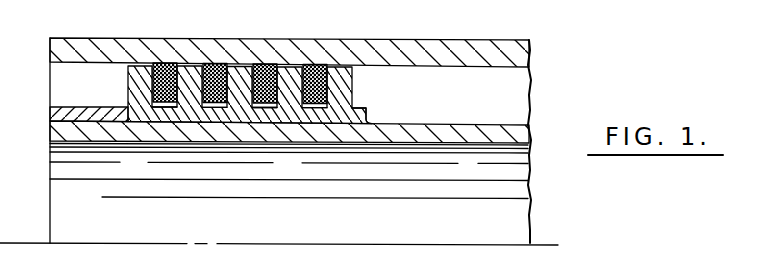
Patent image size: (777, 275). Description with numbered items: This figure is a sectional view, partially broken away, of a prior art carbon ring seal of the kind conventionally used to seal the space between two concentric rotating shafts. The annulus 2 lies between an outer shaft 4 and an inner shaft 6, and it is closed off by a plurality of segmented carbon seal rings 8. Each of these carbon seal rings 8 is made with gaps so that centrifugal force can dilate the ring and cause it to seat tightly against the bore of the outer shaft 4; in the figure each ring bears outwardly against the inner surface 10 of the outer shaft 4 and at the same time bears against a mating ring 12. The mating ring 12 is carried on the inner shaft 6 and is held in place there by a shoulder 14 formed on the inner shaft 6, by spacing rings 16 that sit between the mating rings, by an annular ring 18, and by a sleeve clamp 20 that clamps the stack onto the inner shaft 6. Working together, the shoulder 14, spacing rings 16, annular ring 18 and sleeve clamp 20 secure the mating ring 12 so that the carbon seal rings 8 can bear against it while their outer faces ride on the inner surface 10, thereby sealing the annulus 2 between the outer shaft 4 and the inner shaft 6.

The annulus 2 is at (490, 102).
The outer shaft 4 is at (426, 41).
The inner shaft 6 is at (447, 132).
The segmented carbon seal rings 8 is at (313, 67).
The inner surface 10 is at (402, 66).
The mating ring 12 is at (237, 72).
The shoulder 14 is at (356, 108).
The spacing rings 16 is at (312, 108).
The annular ring 18 is at (150, 142).
The sleeve clamp 20 is at (85, 107).